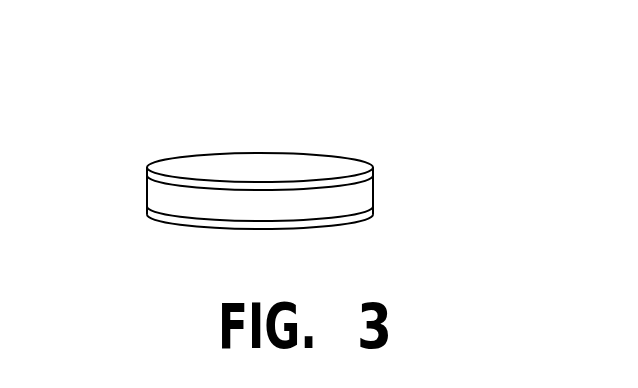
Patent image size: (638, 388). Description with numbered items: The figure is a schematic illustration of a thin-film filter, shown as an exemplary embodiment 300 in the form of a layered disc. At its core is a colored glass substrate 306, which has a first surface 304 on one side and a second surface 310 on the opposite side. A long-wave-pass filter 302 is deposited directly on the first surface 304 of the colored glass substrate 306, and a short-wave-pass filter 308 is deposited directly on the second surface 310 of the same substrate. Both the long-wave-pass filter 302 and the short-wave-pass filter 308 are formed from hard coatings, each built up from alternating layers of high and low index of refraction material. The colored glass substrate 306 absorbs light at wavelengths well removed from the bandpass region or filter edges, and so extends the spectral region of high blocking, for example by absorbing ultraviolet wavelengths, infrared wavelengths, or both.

The exemplary embodiment 300 is at (424, 121).
The long-wave-pass filter 302 is at (373, 168).
The first surface 304 is at (147, 176).
The colored glass substrate 306 is at (373, 193).
The short-wave-pass filter 308 is at (373, 213).
The second surface 310 is at (147, 210).